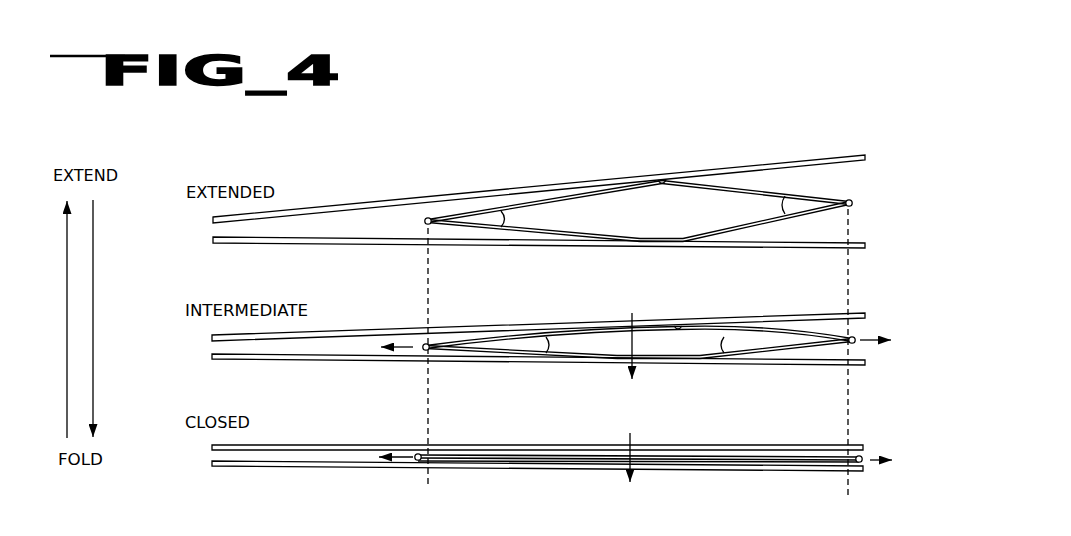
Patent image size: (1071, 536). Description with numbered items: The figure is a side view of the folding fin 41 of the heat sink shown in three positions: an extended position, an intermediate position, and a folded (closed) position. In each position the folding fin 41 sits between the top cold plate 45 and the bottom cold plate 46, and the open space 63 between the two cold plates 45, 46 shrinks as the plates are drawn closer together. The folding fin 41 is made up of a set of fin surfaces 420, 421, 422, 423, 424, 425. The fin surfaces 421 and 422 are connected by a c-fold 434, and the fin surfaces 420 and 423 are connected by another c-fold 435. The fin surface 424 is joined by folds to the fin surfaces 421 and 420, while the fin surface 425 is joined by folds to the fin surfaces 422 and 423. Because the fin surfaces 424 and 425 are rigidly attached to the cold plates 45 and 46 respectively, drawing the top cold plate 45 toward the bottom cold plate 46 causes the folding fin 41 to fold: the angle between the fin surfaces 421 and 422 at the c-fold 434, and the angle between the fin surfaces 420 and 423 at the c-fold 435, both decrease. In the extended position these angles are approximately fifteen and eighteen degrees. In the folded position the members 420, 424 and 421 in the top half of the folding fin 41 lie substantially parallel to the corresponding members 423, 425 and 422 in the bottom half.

The folding fin 41 is at (622, 227).
The top cold plate 45 is at (335, 208).
The bottom cold plate 46 is at (335, 243).
The open space 63 is at (872, 162).
The fin surface 420 is at (755, 186).
The fin surface 421 is at (499, 208).
The fin surface 422 is at (484, 233).
The fin surface 423 is at (752, 225).
The fin surface 424 is at (661, 180).
The fin surface 425 is at (642, 242).
The c-fold 434 is at (424, 219).
The c-fold 435 is at (852, 200).